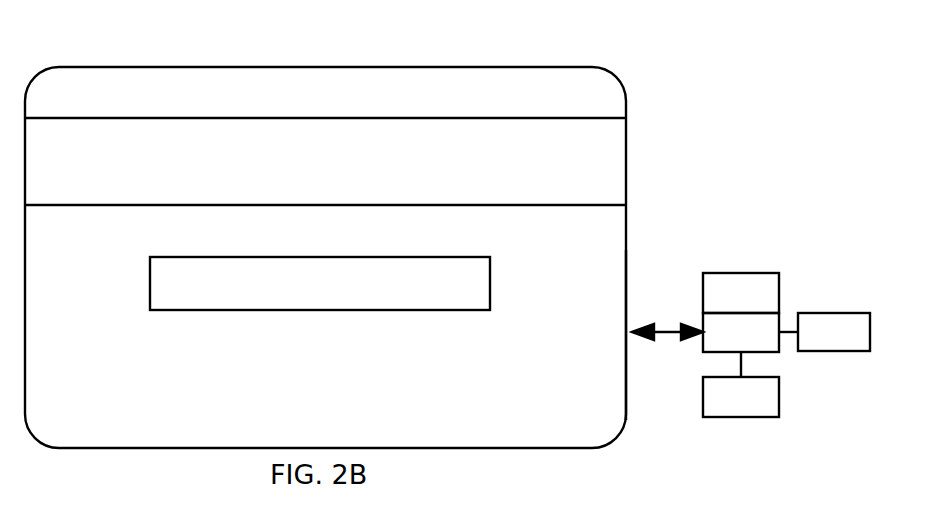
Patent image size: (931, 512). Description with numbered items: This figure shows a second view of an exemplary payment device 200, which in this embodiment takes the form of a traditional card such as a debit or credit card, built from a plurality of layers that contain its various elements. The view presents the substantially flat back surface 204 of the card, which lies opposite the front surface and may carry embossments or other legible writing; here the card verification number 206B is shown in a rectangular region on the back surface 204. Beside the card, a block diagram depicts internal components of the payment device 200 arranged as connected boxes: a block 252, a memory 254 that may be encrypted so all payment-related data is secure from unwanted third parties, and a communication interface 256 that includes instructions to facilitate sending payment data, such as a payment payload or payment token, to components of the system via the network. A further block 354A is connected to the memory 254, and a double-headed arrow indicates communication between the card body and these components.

The payment device 200 is at (137, 72).
The back surface 204 is at (607, 246).
The card verification number 206B is at (457, 258).
The antenna 252 is at (741, 293).
The memory 254 is at (741, 332).
The communication interface 256 is at (741, 384).
The sensor / input component 354A is at (824, 332).